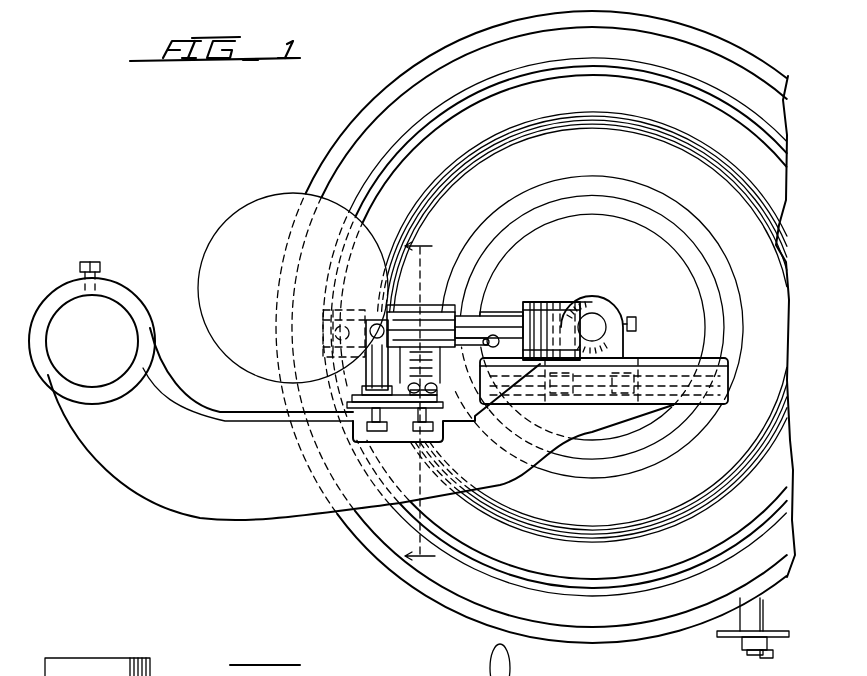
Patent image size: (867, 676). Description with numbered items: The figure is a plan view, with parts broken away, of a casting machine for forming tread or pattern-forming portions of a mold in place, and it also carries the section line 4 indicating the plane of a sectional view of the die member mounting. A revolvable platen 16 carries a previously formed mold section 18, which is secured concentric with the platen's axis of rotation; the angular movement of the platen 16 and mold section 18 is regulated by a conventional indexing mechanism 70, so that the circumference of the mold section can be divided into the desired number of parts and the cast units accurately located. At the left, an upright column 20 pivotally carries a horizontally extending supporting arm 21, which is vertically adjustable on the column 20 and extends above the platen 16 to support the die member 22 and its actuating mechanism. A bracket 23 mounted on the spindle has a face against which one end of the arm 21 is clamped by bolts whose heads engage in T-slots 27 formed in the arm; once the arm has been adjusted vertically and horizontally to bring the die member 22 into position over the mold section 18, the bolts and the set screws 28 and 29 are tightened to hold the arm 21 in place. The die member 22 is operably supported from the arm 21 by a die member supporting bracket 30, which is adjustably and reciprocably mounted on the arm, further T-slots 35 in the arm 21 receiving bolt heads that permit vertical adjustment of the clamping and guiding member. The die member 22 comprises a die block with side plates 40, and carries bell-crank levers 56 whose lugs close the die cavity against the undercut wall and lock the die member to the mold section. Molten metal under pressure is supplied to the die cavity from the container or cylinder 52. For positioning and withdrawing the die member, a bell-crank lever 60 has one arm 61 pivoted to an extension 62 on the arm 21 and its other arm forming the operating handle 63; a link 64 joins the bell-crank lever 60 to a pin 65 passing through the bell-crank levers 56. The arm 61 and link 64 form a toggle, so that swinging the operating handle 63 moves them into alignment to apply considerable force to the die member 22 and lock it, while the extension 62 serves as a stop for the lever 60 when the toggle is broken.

The section line 4- 4 is at (422, 402).
The revolvable platen 16 is at (357, 537).
The mold section 18 is at (582, 343).
The upright column 20 is at (70, 365).
The supporting arm 21 is at (167, 487).
The die member 22 is at (426, 311).
The bracket 23 is at (616, 352).
The T-slots 27 is at (712, 384).
The set screw 28 is at (637, 322).
The set screw 29 is at (88, 262).
The die member supporting bracket 30 is at (381, 352).
The T-slots 35 is at (398, 432).
The side plates 40 is at (457, 310).
The container or cylinder 52 is at (216, 238).
The bell-crank levers 56 is at (428, 304).
The bell-crank lever 60 is at (505, 308).
The arm of bell-crank lever 61 is at (514, 312).
The extension 62 is at (577, 301).
The operating handle 63 is at (486, 348).
The link 64 is at (433, 347).
The pin 65 is at (483, 308).
The indexing mechanism 70 is at (775, 653).